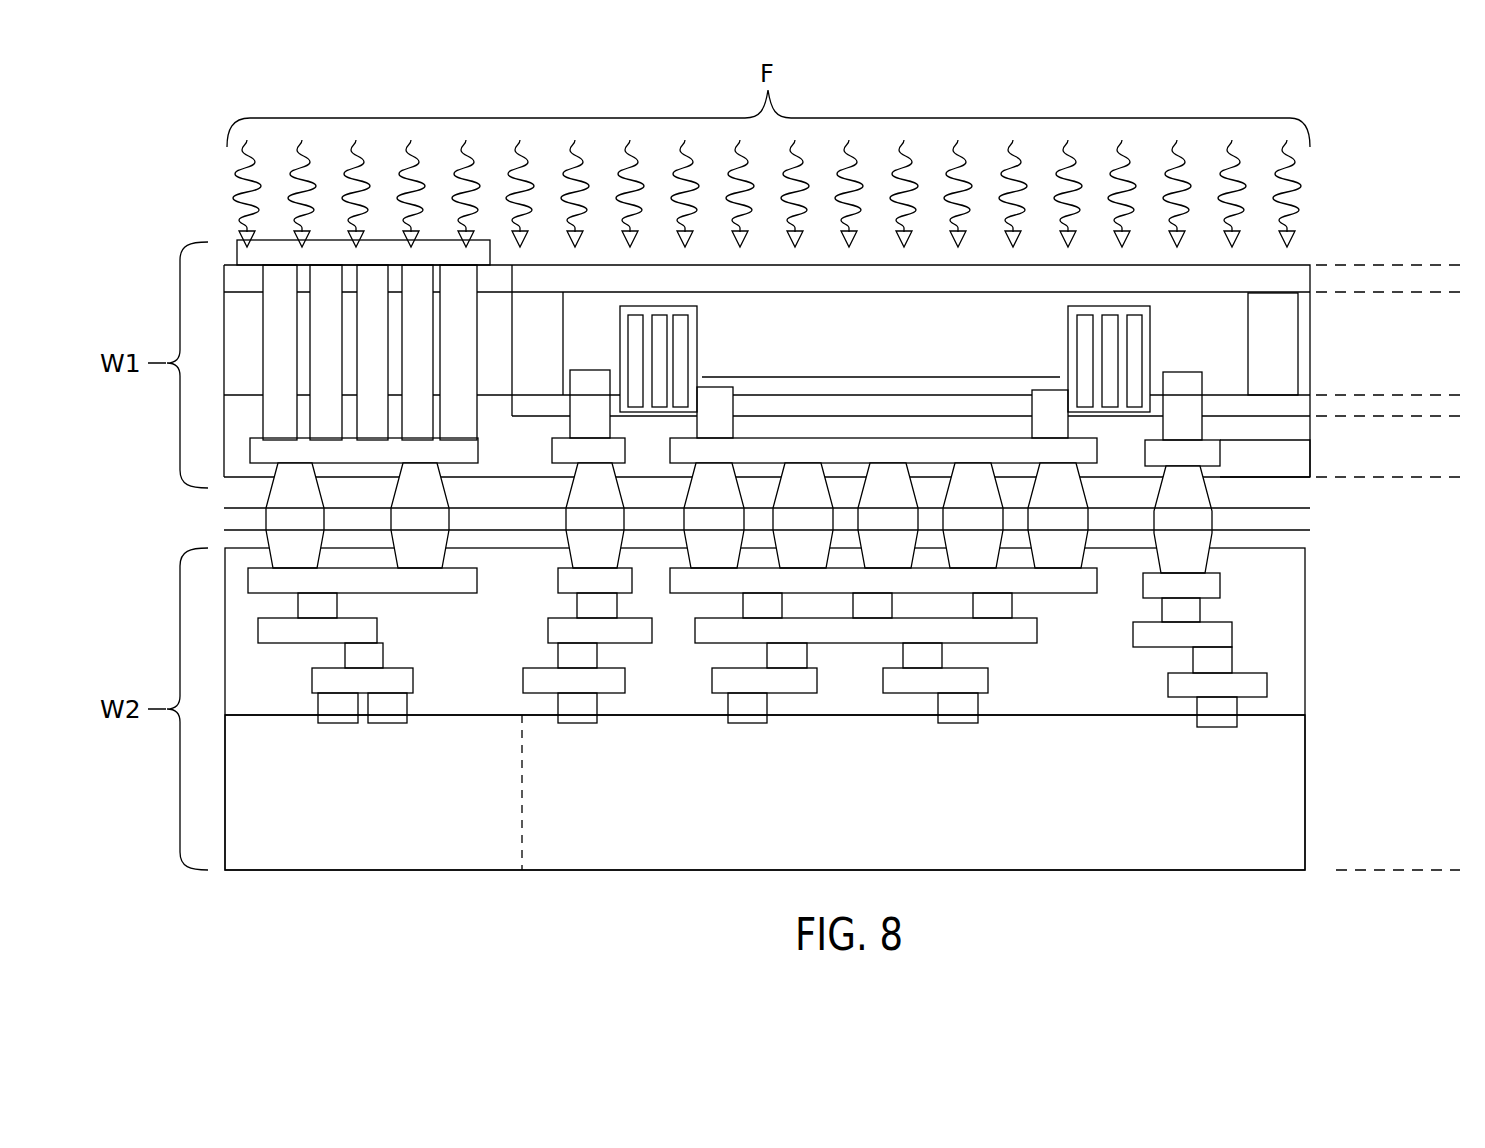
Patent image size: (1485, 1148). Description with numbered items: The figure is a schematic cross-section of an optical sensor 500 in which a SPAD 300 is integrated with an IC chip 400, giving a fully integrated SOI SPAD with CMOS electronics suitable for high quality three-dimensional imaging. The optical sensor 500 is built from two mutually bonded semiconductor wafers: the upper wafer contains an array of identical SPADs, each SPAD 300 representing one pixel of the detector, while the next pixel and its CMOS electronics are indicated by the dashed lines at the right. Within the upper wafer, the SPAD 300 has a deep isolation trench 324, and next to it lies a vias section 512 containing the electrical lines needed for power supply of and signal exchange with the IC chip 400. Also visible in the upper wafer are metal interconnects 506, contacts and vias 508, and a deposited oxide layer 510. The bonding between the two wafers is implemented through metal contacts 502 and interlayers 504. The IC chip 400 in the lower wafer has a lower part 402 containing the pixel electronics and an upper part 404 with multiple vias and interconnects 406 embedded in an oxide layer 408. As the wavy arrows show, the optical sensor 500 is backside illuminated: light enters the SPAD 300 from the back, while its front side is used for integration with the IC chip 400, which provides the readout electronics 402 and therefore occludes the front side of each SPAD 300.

The optical sensor 500 is at (1143, 75).
The SPAD 300 is at (1316, 232).
The vias section 512 is at (272, 252).
The deep isolation trench 324 is at (730, 323).
The contacts and vias 508 is at (1197, 411).
The deposited oxide layer 510 is at (1299, 457).
The metal interconnects 506 is at (1221, 469).
The interlayers 504 is at (1217, 523).
The metal contacts 502 is at (288, 543).
The IC chip 400 is at (1221, 831).
The upper part of the IC chip 404 is at (1370, 718).
The oxide layer 408 is at (1282, 609).
The vias and interconnects 406 is at (1282, 673).
The lower part of the IC chip 402 is at (1310, 870).